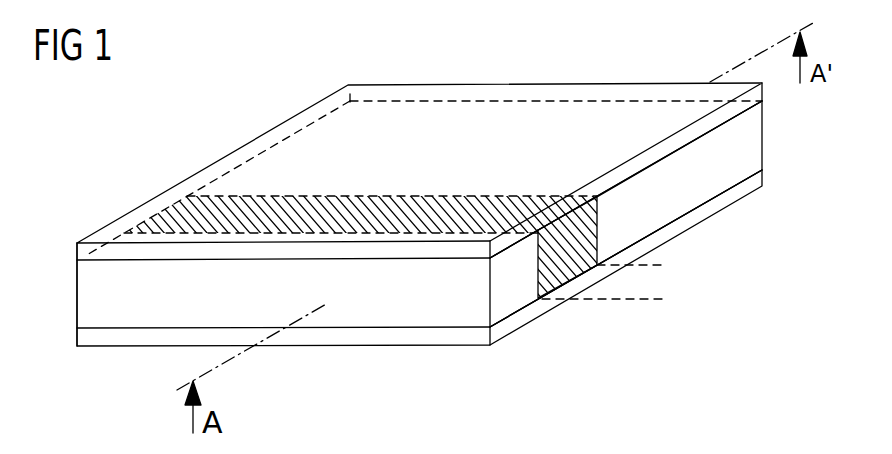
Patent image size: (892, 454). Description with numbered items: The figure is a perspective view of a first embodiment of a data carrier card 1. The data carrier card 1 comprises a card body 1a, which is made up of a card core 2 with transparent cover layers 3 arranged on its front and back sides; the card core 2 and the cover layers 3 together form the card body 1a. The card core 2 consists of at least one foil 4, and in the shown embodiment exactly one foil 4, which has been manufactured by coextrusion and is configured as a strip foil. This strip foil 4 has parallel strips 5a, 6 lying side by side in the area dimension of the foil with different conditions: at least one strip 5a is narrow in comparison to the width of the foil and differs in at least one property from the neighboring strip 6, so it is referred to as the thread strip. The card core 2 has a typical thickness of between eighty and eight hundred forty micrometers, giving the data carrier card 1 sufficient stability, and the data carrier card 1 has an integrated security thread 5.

The data carrier card 1 is at (179, 148).
The card body 1a is at (70, 245).
The card core 2 is at (770, 98).
The transparent cover layers 3 is at (642, 158).
The foil 4 is at (460, 210).
The security thread 5 is at (663, 265).
The thread strip 5a is at (570, 266).
The neighboring strip 6 is at (678, 203).